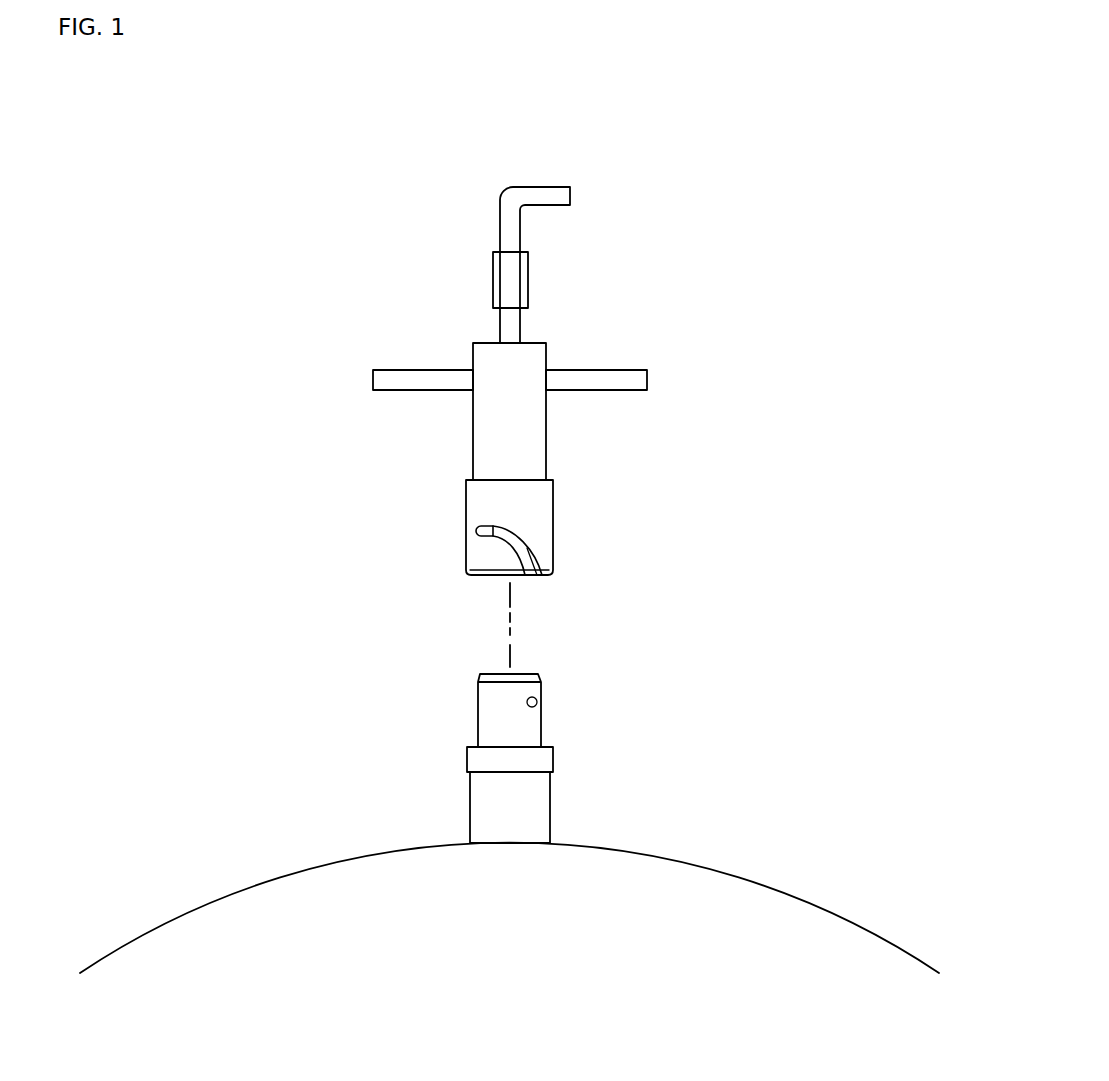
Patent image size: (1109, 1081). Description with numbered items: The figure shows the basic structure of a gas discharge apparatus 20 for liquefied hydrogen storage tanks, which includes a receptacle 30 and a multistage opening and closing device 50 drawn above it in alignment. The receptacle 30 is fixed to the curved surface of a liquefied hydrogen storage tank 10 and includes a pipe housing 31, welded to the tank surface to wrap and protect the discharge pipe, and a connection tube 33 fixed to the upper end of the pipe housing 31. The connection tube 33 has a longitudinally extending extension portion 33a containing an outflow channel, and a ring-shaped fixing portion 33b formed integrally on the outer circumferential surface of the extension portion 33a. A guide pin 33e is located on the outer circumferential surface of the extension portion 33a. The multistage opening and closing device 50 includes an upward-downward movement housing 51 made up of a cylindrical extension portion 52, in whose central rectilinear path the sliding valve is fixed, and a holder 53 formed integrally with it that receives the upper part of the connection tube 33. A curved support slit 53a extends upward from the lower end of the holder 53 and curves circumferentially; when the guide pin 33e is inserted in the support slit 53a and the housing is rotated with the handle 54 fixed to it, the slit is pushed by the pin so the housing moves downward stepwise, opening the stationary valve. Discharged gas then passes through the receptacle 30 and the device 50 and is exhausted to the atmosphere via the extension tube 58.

The liquefied hydrogen storage tank 10 is at (763, 902).
The gas discharge apparatus 20 is at (745, 485).
The receptacle 30 is at (445, 803).
The pipe housing 31 is at (537, 817).
The connection tube 33 is at (375, 665).
The extension portion 33a is at (485, 697).
The fixing portion 33b is at (477, 757).
The guide pin 33e is at (540, 702).
The multistage opening and closing device 50 is at (368, 320).
The upward-downward movement housing 51 is at (368, 462).
The extension portion 52 is at (490, 425).
The holder 53 is at (483, 503).
The support slit 53a is at (543, 562).
The handle 54 is at (601, 368).
The extension tube 58 is at (543, 185).